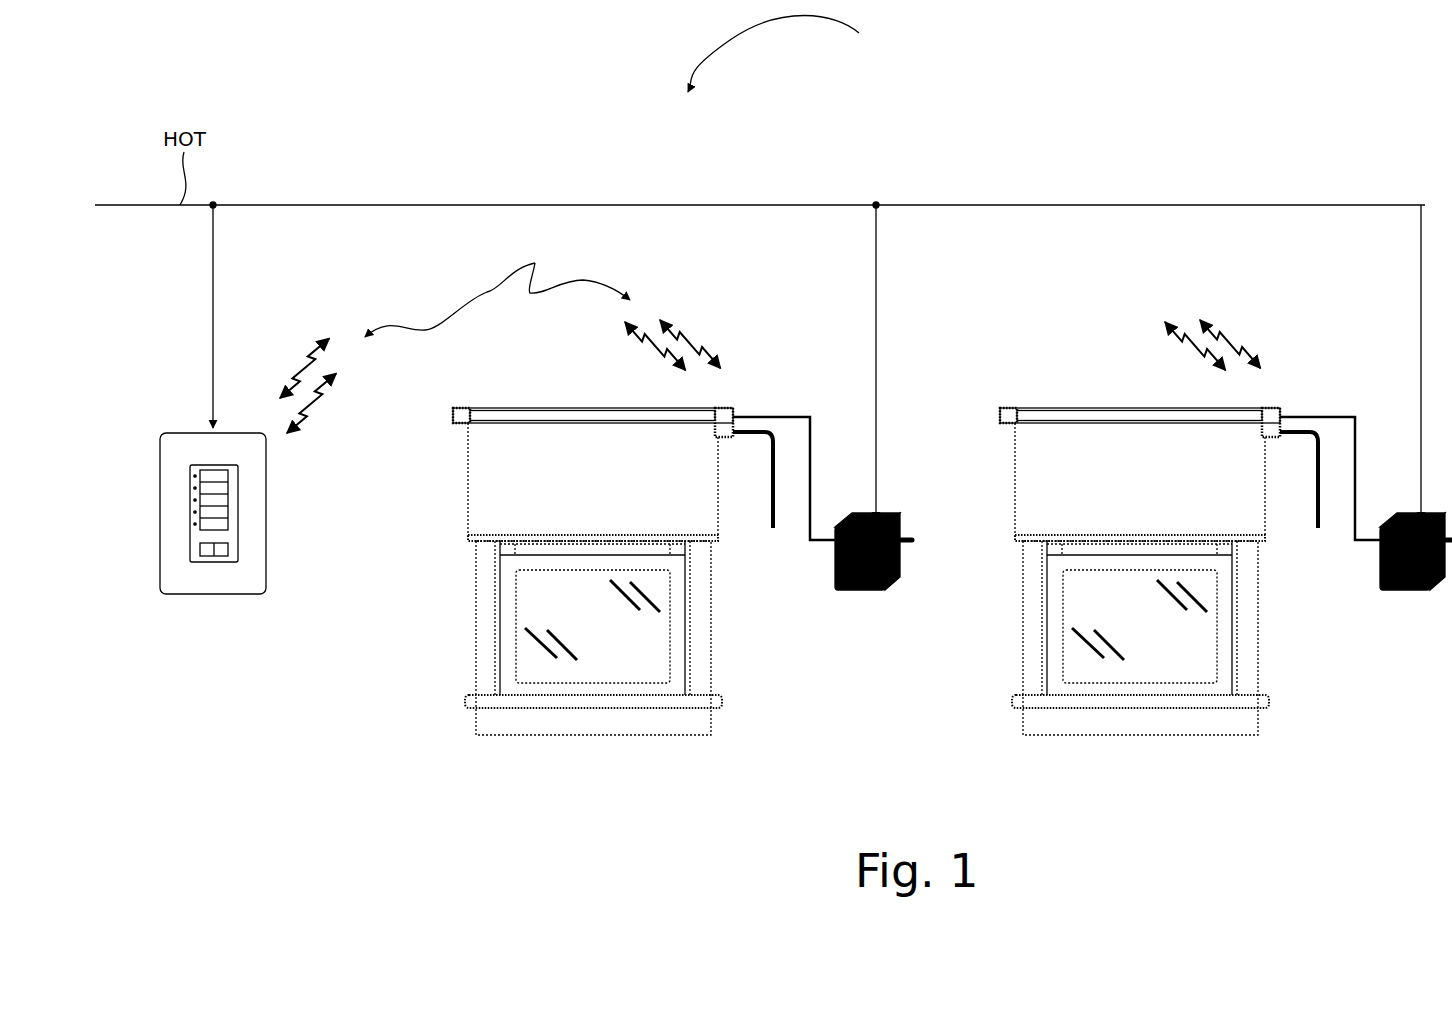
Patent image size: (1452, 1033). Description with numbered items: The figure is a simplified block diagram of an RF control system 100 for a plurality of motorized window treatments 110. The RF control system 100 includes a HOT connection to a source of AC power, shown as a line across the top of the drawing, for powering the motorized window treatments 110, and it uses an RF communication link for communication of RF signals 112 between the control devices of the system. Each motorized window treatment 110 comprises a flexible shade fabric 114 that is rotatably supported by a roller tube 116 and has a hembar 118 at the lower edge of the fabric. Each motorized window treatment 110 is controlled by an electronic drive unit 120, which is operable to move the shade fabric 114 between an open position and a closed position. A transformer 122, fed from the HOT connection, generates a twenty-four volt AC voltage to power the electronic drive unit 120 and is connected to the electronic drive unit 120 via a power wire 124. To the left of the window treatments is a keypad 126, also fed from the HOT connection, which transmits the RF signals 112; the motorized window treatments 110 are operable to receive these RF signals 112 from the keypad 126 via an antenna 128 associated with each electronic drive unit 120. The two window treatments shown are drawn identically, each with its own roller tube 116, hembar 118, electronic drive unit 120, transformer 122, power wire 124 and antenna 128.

The RF control system 100 is at (797, 54).
The motorized window treatment 110 is at (455, 565).
The RF signals 112 is at (765, 332).
The flexible shade fabric 114 is at (866, 480).
The roller tube 116 is at (515, 410).
The hembar 118 is at (468, 538).
The electronic drive unit 120 is at (733, 408).
The transformer 122 is at (870, 592).
The power wire 124 is at (790, 417).
The keypad 126 is at (176, 433).
The antenna 128 is at (773, 520).